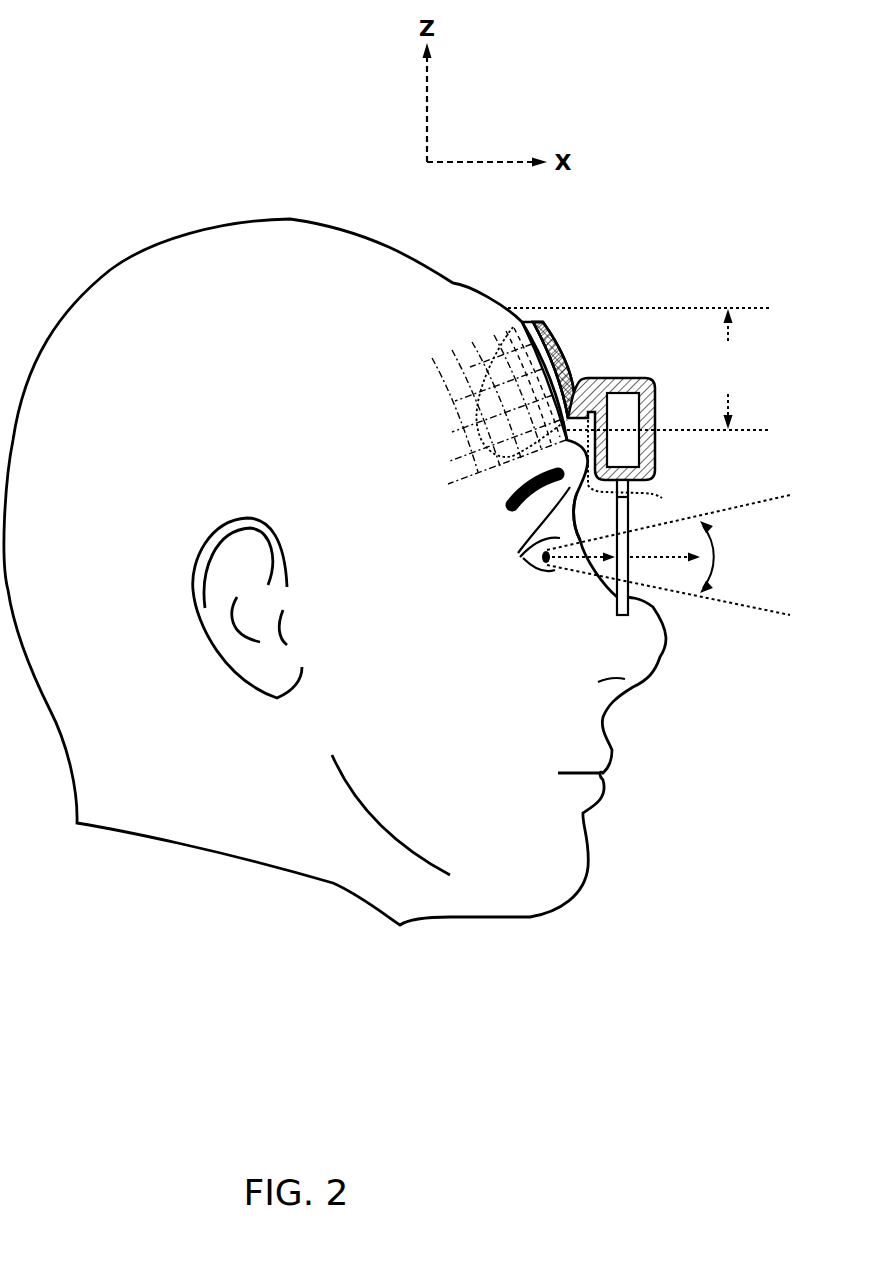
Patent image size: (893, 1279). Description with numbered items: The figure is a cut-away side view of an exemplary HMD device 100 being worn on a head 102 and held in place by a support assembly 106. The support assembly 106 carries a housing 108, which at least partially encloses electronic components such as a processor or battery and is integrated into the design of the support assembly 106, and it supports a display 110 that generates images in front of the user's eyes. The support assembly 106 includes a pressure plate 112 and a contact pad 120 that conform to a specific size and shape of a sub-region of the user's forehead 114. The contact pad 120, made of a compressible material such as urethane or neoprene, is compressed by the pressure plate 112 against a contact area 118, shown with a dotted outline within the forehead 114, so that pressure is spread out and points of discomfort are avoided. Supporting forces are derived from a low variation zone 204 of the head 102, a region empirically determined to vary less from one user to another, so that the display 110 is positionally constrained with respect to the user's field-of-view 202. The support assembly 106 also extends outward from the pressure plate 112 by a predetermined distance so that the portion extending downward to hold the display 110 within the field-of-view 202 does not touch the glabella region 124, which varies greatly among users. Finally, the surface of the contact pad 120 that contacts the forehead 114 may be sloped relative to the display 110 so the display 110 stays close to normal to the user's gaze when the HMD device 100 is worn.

The HMD device 100 is at (602, 272).
The head 102 is at (335, 572).
The support assembly 106 is at (651, 468).
The housing 108 is at (623, 430).
The display 110 is at (662, 660).
The pressure plate 112 is at (543, 322).
The forehead 114 is at (470, 331).
The contact area 118 is at (478, 390).
The contact pad 120 is at (527, 320).
The glabella region 124 is at (641, 466).
The field-of-view 202 is at (678, 555).
The low variation zone 204 is at (654, 369).